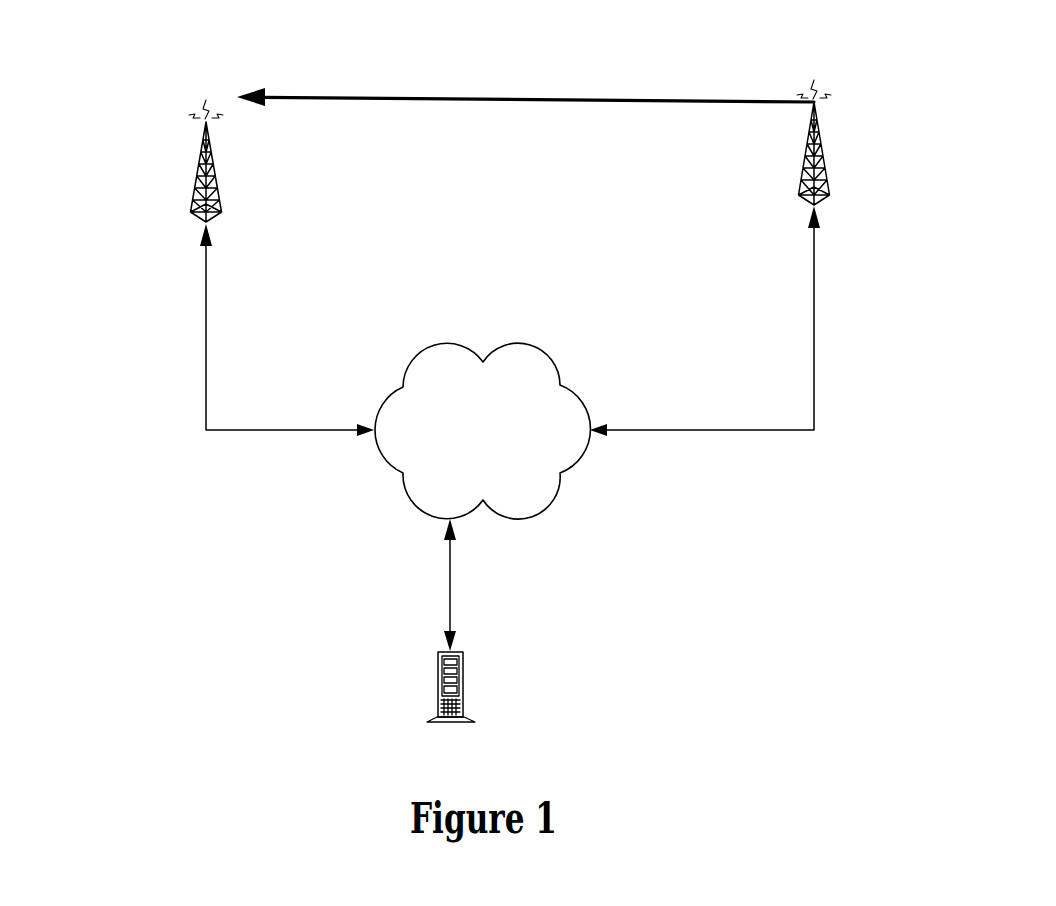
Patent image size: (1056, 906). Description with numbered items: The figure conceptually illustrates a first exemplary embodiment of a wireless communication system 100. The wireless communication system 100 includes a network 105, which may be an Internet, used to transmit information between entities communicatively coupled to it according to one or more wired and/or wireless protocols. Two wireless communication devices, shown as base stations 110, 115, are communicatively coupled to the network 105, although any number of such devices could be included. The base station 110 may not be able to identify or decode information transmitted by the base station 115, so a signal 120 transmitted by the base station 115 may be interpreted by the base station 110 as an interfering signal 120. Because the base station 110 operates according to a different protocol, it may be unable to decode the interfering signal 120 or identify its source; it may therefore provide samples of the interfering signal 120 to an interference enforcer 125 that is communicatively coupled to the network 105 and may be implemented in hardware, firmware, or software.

The wireless communication system 100 is at (948, 70).
The network 105 is at (453, 456).
The base station 110 is at (190, 212).
The base station 115 is at (832, 195).
The interfering signal 120 is at (483, 100).
The interference enforcer 125 is at (463, 687).